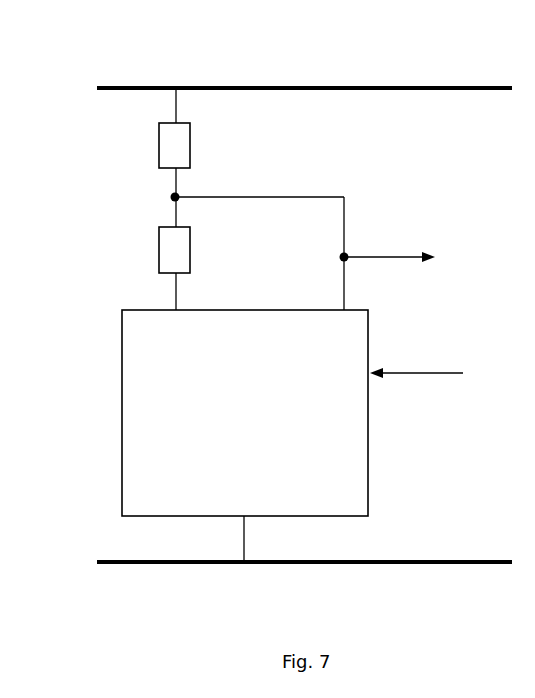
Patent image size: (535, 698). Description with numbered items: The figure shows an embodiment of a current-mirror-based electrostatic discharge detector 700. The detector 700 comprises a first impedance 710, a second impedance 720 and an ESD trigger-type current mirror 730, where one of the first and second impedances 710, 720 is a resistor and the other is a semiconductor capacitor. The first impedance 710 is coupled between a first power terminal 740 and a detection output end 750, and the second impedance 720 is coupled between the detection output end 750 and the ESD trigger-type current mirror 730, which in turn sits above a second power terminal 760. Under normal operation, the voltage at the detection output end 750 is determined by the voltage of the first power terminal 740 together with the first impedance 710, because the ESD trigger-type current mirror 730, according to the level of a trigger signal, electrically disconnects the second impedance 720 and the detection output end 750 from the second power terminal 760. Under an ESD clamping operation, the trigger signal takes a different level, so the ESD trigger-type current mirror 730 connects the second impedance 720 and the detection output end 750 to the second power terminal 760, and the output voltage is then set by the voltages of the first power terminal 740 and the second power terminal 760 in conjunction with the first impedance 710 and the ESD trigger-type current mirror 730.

The detector 700 is at (44, 628).
The first impedance 710 is at (159, 139).
The second impedance 720 is at (159, 248).
The ESD trigger-type current mirror 730 is at (121, 342).
The first power terminal 740 is at (302, 87).
The detection output end 750 is at (347, 255).
The second power terminal 760 is at (300, 564).